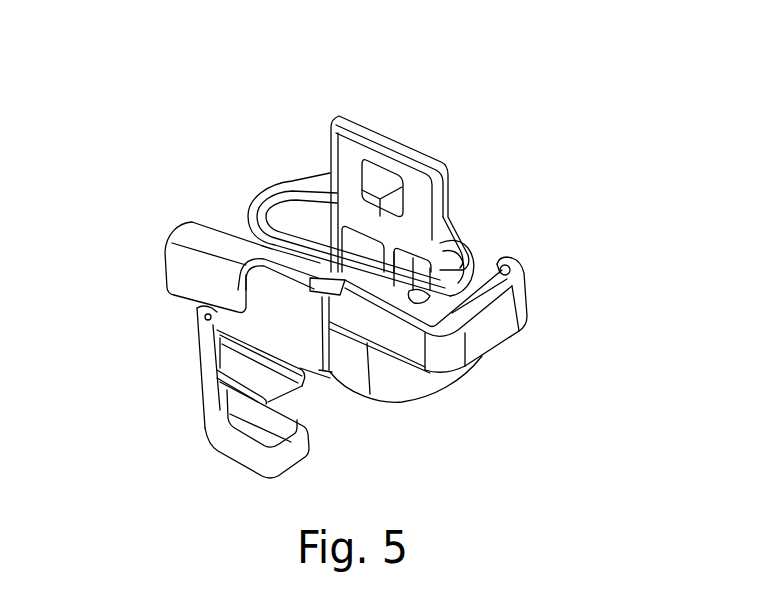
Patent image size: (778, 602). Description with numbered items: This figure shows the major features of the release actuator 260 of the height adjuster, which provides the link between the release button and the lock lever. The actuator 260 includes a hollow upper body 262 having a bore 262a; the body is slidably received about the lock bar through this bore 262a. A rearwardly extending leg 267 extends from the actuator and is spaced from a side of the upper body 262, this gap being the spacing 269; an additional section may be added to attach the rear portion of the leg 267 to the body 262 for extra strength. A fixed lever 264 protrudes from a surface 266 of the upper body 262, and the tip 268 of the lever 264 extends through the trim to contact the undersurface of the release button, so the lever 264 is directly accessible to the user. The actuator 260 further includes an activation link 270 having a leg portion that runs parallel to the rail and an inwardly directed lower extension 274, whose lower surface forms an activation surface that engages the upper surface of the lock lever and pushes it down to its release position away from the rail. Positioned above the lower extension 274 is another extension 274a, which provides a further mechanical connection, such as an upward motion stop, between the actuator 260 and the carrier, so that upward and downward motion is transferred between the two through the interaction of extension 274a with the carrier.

The release actuator 260 is at (300, 164).
The hollow upper body 262 is at (412, 382).
The bore 262a is at (313, 214).
The fixed lever 264 is at (260, 248).
The surface 266 is at (400, 342).
The rearwardly extending leg 267 is at (497, 318).
The tip 268 is at (192, 248).
The spacing 269 is at (485, 270).
The activation link 270 is at (199, 375).
The lower extension 274 is at (233, 447).
The extension 274a is at (268, 377).